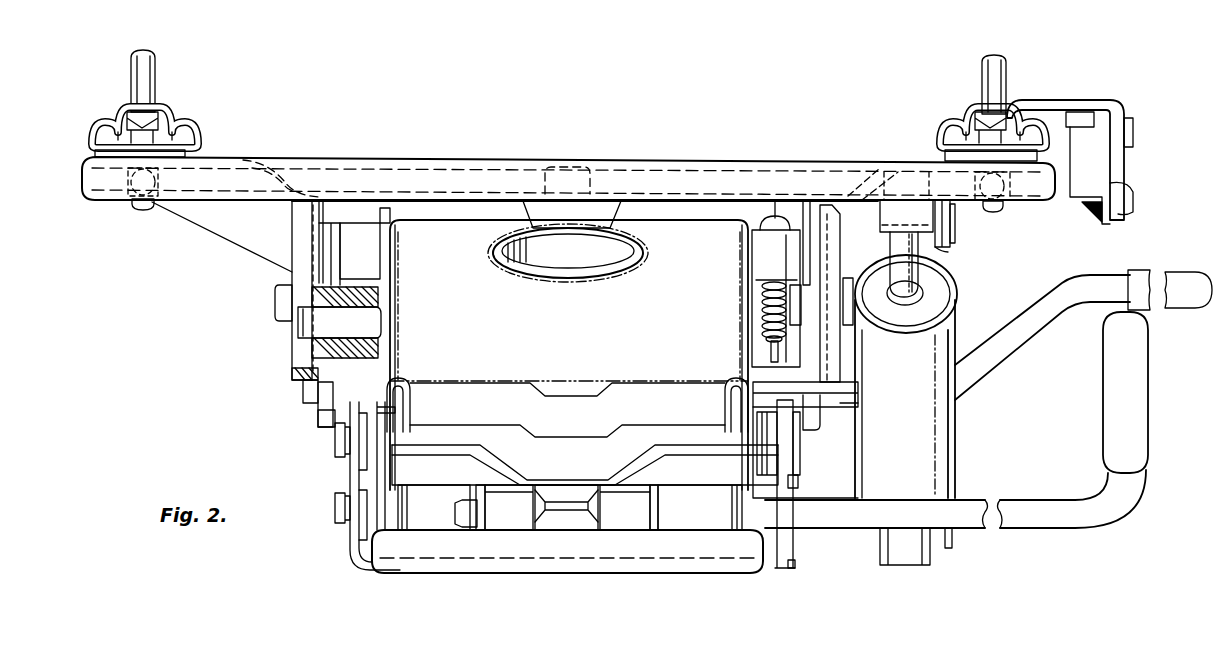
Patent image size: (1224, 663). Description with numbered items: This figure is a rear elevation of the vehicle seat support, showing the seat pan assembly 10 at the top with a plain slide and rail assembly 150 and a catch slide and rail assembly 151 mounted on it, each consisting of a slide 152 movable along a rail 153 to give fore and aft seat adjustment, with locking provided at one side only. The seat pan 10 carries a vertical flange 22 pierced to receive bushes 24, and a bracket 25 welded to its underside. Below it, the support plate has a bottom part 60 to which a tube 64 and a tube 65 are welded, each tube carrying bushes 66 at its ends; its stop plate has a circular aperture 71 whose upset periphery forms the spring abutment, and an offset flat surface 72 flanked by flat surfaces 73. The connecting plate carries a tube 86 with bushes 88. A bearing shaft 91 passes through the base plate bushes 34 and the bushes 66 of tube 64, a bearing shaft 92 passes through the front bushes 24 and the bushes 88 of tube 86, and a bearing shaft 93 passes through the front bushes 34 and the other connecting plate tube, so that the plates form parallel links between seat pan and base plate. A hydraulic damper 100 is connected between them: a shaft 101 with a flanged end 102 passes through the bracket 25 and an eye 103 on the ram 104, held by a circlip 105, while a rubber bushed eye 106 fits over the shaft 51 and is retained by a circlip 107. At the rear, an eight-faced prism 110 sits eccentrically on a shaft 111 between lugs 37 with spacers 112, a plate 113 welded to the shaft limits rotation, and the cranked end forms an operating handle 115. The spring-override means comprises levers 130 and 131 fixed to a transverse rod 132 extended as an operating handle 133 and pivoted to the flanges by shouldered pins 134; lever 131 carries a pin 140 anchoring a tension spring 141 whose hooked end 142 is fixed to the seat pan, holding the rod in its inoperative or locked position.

The seat pan assembly 10 is at (637, 158).
The flange 22 is at (293, 376).
The bush 24 is at (330, 185).
The bracket 25 is at (948, 252).
The bush 34 is at (366, 455).
The lug 37 is at (481, 520).
The shaft 51 is at (952, 536).
The bottom part 60 is at (569, 345).
The tube 64 is at (395, 412).
The tube 65 is at (396, 205).
The bush 66 is at (356, 230).
The circular aperture 71 is at (556, 270).
The flat surface 72 is at (564, 500).
The flat surface 73 is at (445, 470).
The tube 86 is at (370, 300).
The bush 88 is at (340, 356).
The bearing shaft 91 is at (340, 441).
The bearing shaft 92 is at (318, 333).
The bearing shaft 93 is at (338, 525).
The hydraulic damper 100 is at (906, 376).
The shaft 101 is at (950, 222).
The flanged end 102 is at (824, 210).
The eye 103 is at (895, 205).
The ram 104 is at (908, 283).
The circlip 105 is at (955, 232).
The rubber bushed eye 106 is at (917, 550).
The circlip 107 is at (953, 547).
The prism 110 is at (584, 494).
The shaft 111 is at (747, 515).
The spacer 112 is at (518, 520).
The plate 113 is at (796, 568).
The operating handle 115 is at (1136, 386).
The lever 130 is at (322, 422).
The lever 131 is at (814, 425).
The transverse rod 132 is at (849, 415).
The operating handle 133 is at (1140, 268).
The shouldered pin 134 is at (275, 302).
The pin 140 is at (770, 359).
The tension spring 141 is at (795, 346).
The hooked end 142 is at (795, 196).
The plain slide and rail assembly 150 is at (168, 73).
The catch slide and rail assembly 151 is at (966, 79).
The slide 152 is at (168, 112).
The rail 153 is at (198, 136).